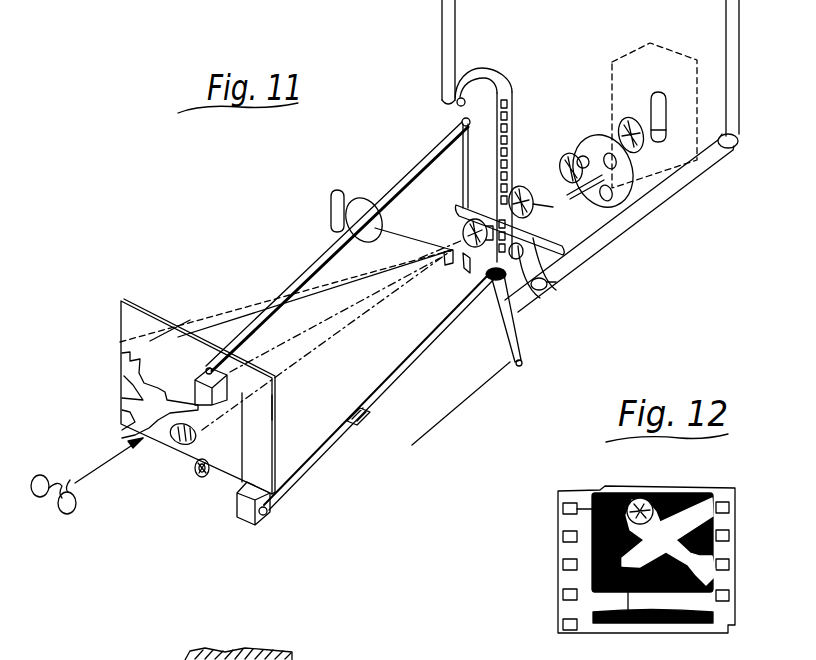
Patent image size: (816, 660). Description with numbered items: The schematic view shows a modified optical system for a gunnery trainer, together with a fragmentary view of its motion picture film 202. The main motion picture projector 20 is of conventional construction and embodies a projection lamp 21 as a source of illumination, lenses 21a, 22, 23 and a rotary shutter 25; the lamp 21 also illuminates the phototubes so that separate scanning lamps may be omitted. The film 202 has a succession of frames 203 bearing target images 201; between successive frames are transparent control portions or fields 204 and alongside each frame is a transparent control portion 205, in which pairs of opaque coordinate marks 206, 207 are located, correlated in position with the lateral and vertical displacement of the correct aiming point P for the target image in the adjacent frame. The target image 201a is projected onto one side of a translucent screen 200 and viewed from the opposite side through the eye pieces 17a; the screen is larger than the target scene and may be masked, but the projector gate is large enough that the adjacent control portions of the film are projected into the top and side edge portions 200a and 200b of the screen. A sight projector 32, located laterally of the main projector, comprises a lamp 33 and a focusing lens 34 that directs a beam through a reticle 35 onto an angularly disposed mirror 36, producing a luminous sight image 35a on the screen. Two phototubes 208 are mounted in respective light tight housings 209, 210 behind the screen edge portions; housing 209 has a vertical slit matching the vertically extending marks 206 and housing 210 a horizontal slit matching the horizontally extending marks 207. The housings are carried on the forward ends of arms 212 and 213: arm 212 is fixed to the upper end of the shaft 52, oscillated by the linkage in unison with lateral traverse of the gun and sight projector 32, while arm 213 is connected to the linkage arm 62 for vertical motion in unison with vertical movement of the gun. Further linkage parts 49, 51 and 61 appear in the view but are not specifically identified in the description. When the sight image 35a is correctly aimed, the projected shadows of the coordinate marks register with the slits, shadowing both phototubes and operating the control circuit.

In FIG. 11, the motion picture projector 20 is at (626, 56).
In FIG. 11, the projection lamp 21 is at (660, 104).
In FIG. 11, the lens 21a is at (626, 128).
In FIG. 11, the lens 22 is at (566, 158).
In FIG. 11, the lens 23 is at (532, 207).
In FIG. 11, the rotary shutter 25 is at (624, 174).
In FIG. 11, the motion picture film 202 is at (516, 108).
In FIG. 12, the motion picture film 202 is at (616, 560).
In FIG. 11, the shaft 52 is at (462, 187).
In FIG. 11, the arm 212 is at (305, 263).
In FIG. 11, the sight projector 32 is at (368, 196).
In FIG. 11, the lamp 33 is at (330, 210).
In FIG. 11, the focusing lens 34 is at (380, 228).
In FIG. 11, the reticle 35 is at (463, 236).
In FIG. 11, the mirror 36 is at (466, 271).
In FIG. 11, the guide bar 49 is at (548, 266).
In FIG. 11, the carriage 51 is at (558, 250).
In FIG. 11, the link 61 is at (470, 398).
In FIG. 11, the linkage arm 62 is at (512, 338).
In FIG. 11, the arm 213 is at (397, 384).
In FIG. 11, the translucent screen 200 is at (121, 352).
In FIG. 11, the top edge portion of the screen 200a is at (178, 336).
In FIG. 11, the side edge portion of the screen 200b is at (267, 408).
In FIG. 11, the target image 201a is at (130, 412).
In FIG. 11, the eye pieces 17a is at (87, 476).
In FIG. 11, the light tight housing 209 is at (196, 378).
In FIG. 11, the light tight housing 210 is at (250, 516).
In FIG. 11, the sight image 35a is at (201, 479).
In FIG. 11, the correct aiming point P is at (195, 472).
In FIG. 11, the phototubes 208 is at (291, 649).
In FIG. 12, the target images 201 is at (690, 500).
In FIG. 12, the frames 203 is at (619, 529).
In FIG. 12, the transparent control portions 204 is at (683, 606).
In FIG. 12, the transparent control portion 205 is at (582, 500).
In FIG. 12, the coordinate marks 206 is at (626, 600).
In FIG. 12, the coordinate marks 207 is at (580, 515).